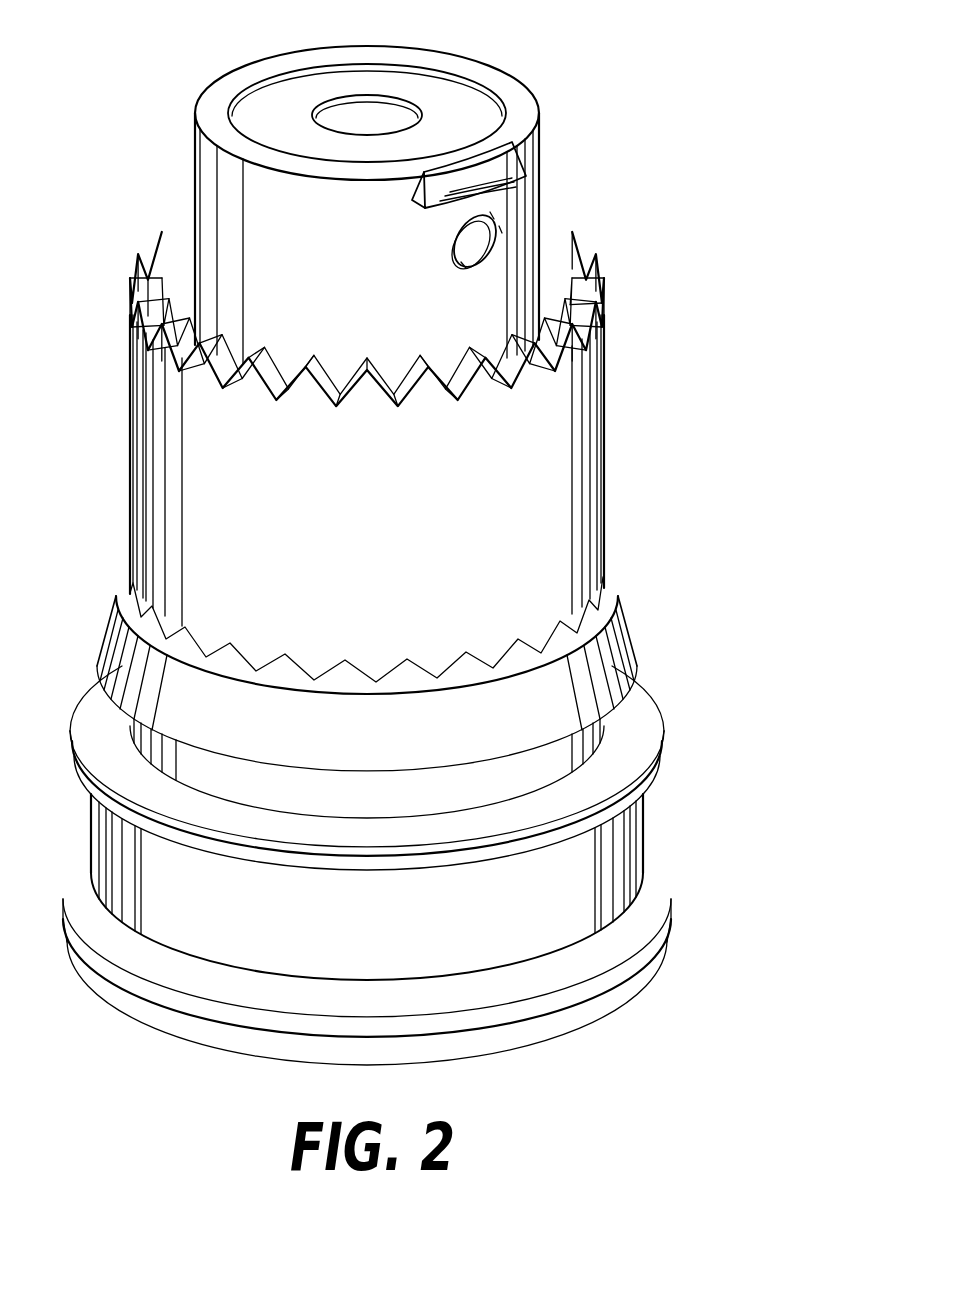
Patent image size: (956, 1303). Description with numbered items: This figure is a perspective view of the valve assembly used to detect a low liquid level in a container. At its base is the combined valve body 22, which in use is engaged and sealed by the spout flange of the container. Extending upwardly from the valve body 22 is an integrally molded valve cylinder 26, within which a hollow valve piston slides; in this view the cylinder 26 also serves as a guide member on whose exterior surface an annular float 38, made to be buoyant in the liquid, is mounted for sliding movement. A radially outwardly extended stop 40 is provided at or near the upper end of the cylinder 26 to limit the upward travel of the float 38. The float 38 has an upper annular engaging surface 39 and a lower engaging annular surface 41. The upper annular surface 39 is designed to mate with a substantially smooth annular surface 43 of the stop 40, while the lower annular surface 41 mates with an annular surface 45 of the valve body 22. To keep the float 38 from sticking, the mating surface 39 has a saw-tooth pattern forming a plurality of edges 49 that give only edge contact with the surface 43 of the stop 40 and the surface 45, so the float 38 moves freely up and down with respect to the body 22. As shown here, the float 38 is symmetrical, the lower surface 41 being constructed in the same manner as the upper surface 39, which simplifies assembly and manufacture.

The valve body 22 is at (667, 739).
The valve cylinder 26 is at (180, 149).
The annular float 38 is at (621, 393).
The upper annular engaging surface 39 is at (586, 273).
The stop 40 is at (507, 158).
The lower engaging annular surface 41 is at (600, 644).
The annular surface of stop 43 is at (517, 190).
The annular surface of body 45 is at (150, 622).
The edges 49 is at (178, 340).